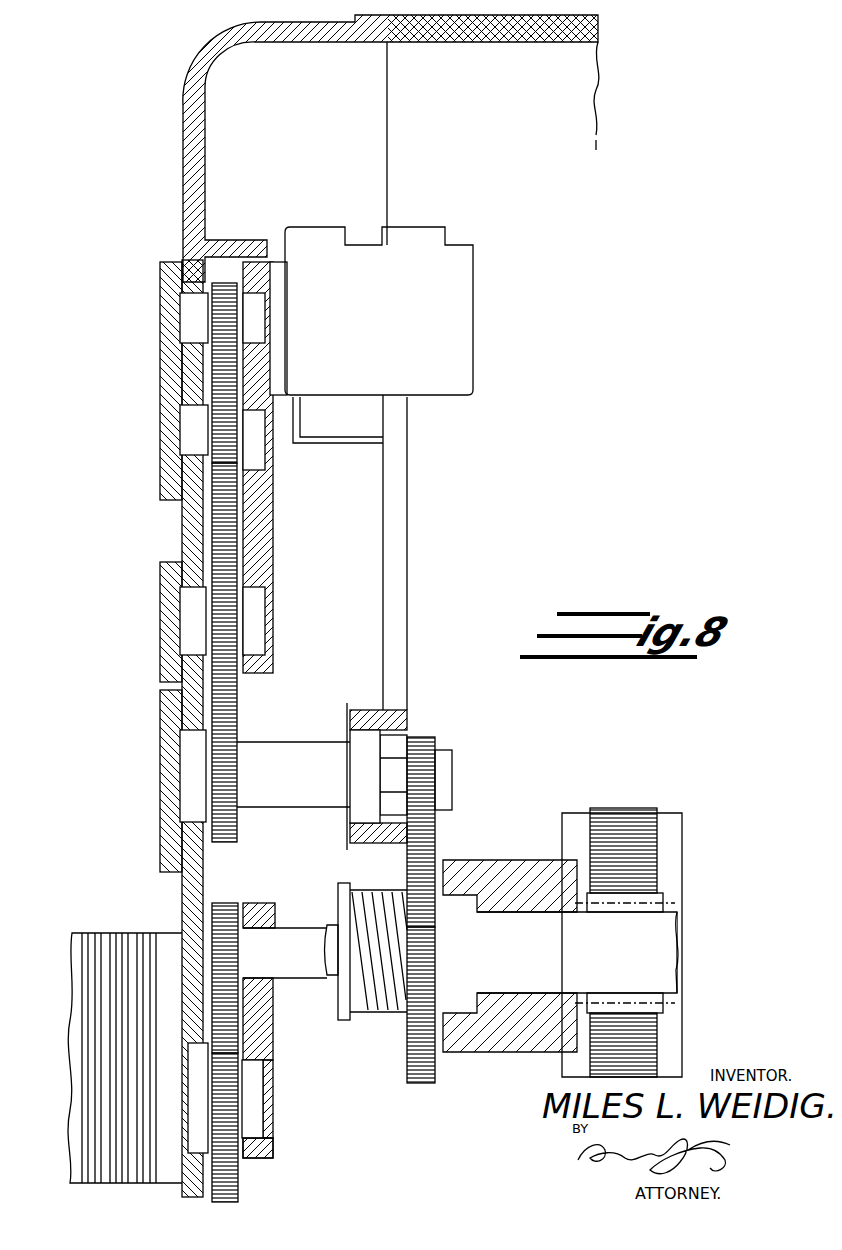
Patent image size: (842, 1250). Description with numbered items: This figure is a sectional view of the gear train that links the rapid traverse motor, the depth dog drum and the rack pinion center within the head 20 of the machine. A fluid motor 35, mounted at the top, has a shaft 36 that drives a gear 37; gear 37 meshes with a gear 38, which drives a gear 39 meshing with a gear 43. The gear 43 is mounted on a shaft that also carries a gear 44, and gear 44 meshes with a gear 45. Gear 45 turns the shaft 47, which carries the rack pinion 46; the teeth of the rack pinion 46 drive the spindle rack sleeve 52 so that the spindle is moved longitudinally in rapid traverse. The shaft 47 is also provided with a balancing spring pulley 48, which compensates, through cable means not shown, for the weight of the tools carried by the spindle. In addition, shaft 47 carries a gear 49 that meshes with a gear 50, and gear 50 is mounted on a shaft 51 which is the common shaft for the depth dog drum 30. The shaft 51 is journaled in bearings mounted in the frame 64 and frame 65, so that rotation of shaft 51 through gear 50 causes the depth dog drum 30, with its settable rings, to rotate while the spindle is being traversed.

The head 20 is at (185, 105).
The depth dog drum 30 is at (107, 1113).
The fluid motor 35 is at (455, 298).
The shaft 36 is at (253, 312).
The gear 37 is at (193, 317).
The gear 38 is at (203, 430).
The gear 39 is at (186, 607).
The gear 43 is at (230, 762).
The gear 44 is at (420, 745).
The gear 45 is at (410, 1062).
The rack pinion 46 is at (660, 898).
The shaft 47 is at (293, 957).
The balancing spring pulley 48 is at (375, 1010).
The gear 49 is at (210, 910).
The gear 50 is at (357, 1188).
The shaft 51 is at (253, 1093).
The spindle rack sleeve 52 is at (673, 822).
The frame 64 is at (195, 882).
The frame 65 is at (260, 1157).